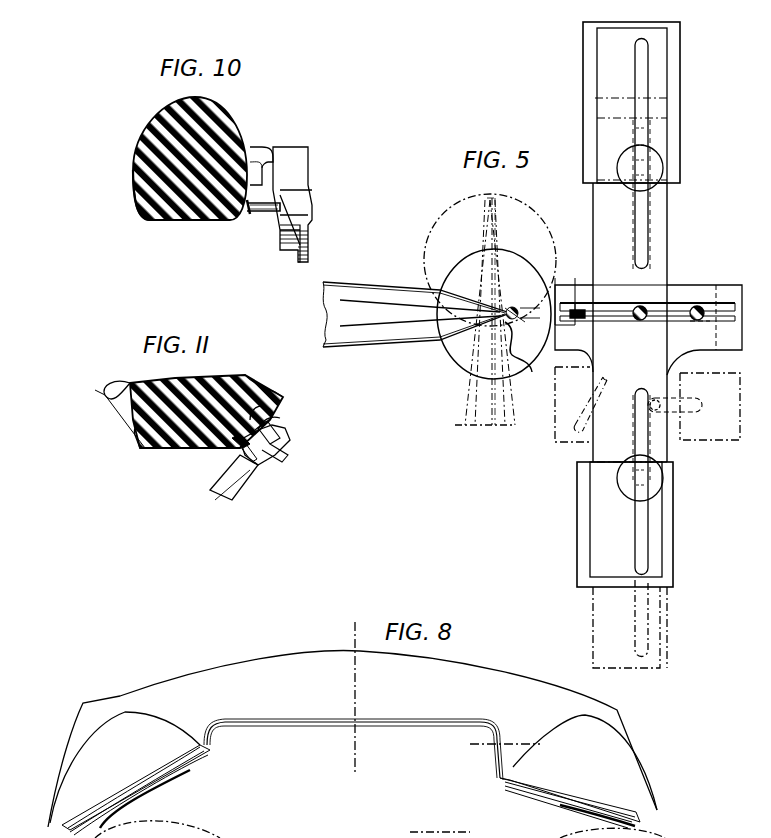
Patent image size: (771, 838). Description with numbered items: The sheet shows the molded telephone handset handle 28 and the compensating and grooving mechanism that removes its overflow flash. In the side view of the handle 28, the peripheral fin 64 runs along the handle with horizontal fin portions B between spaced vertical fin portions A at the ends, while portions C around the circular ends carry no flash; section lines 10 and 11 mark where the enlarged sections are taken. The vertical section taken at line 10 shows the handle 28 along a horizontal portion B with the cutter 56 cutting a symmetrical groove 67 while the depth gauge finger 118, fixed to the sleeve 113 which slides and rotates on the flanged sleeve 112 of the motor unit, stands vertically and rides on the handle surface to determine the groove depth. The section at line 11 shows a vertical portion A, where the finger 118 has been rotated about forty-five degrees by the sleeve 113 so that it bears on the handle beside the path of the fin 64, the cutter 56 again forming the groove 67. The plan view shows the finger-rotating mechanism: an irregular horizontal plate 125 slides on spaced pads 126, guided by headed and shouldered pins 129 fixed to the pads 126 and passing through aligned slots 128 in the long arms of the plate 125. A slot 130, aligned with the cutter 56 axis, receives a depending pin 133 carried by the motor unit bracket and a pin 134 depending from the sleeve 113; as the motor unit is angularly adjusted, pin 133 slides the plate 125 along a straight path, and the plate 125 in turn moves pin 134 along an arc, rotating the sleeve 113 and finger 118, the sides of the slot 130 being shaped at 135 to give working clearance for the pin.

In FIG. 10, the handle 28 is at (150, 142).
In FIG. 11, the handle 28 is at (112, 390).
In FIG. 5, the handle 28 is at (368, 302).
In FIG. 8, the handle 28 is at (126, 690).
In FIG. 10, the fin 64 is at (133, 197).
In FIG. 11, the fin 64 is at (133, 437).
In FIG. 5, the fin 64 is at (330, 282).
In FIG. 8, the fin 64 is at (398, 722).
In FIG. 10, the horizontal peripheral fin portion B is at (126, 216).
In FIG. 5, the horizontal peripheral fin portion B is at (360, 275).
In FIG. 8, the horizontal peripheral fin portion B is at (308, 735).
In FIG. 11, the vertical fin portion A is at (206, 460).
In FIG. 5, the vertical fin portion A is at (421, 290).
In FIG. 8, the vertical fin portion A is at (216, 750).
In FIG. 5, the circular end portion C is at (534, 266).
In FIG. 10, the depth gauge finger 118 is at (250, 150).
In FIG. 11, the depth gauge finger 118 is at (270, 412).
In FIG. 10, the sleeve 113 is at (300, 170).
In FIG. 10, the cutter 56 is at (265, 212).
In FIG. 11, the cutter 56 is at (265, 462).
In FIG. 5, the cutter 56 is at (532, 372).
In FIG. 10, the groove 67 is at (262, 215).
In FIG. 11, the groove 67 is at (228, 462).
In FIG. 10, the flanged sleeve 112 is at (285, 240).
In FIG. 11, the flanged sleeve 112 is at (218, 505).
In FIG. 5, the pads 126 is at (681, 91).
In FIG. 5, the horizontal plate 125 is at (668, 242).
In FIG. 5, the slots 128 is at (637, 88).
In FIG. 5, the headed and shouldered pins 129 is at (660, 158).
In FIG. 5, the slot 130 is at (690, 310).
In FIG. 5, the depending pin 133 is at (697, 306).
In FIG. 5, the pin 134 is at (640, 303).
In FIG. 5, the clearance formation 135 is at (575, 303).
In FIG. 8, the section line 10— 10 is at (347, 631).
In FIG. 8, the section line 11— 11 is at (481, 728).